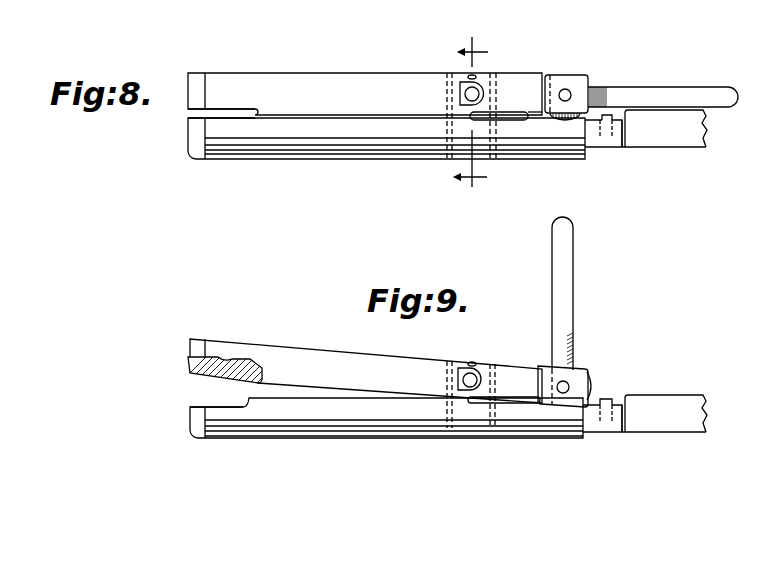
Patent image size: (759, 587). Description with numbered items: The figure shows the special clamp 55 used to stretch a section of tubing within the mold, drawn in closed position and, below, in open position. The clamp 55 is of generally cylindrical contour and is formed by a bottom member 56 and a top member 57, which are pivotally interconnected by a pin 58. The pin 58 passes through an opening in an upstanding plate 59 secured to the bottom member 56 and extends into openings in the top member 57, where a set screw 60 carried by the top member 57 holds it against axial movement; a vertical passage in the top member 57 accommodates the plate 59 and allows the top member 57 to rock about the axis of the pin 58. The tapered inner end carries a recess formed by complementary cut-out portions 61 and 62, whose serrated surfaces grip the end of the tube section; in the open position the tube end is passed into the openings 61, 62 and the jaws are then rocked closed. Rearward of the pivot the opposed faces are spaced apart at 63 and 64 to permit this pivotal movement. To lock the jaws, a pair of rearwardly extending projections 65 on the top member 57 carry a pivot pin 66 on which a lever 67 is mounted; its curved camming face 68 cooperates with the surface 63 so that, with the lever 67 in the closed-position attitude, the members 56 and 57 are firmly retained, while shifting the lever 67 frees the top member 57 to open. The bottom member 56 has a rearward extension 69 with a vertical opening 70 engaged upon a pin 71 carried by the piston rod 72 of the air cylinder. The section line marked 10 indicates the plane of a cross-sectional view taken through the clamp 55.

In FIG. 8, the section line 10- 10 is at (476, 114).
In FIG. 8, the clamp 55 is at (363, 66).
In FIG. 9, the clamp 55 is at (362, 347).
In FIG. 8, the bottom member 56 is at (327, 148).
In FIG. 9, the bottom member 56 is at (285, 433).
In FIG. 8, the top member 57 is at (275, 78).
In FIG. 9, the top member 57 is at (258, 347).
In FIG. 8, the pin 58 is at (466, 89).
In FIG. 9, the pin 58 is at (469, 376).
In FIG. 8, the upstanding plate 59 is at (452, 128).
In FIG. 9, the upstanding plate 59 is at (450, 418).
In FIG. 8, the set screw 60 is at (472, 77).
In FIG. 9, the set screw 60 is at (475, 362).
In FIG. 8, the cut-out portion 61 is at (193, 118).
In FIG. 9, the cut-out portion 61 is at (198, 402).
In FIG. 8, the cut-out portion 62 is at (187, 112).
In FIG. 9, the cut-out portion 62 is at (190, 378).
In FIG. 8, the surface 63 is at (526, 119).
In FIG. 9, the surface 63 is at (504, 400).
In FIG. 8, the surface 64 is at (512, 112).
In FIG. 8, the rearwardly extending projections 65 is at (577, 79).
In FIG. 9, the rearwardly extending projections 65 is at (563, 386).
In FIG. 8, the pivot pin 66 is at (563, 89).
In FIG. 9, the pivot pin 66 is at (559, 382).
In FIG. 8, the lever 67 is at (666, 92).
In FIG. 9, the lever 67 is at (568, 277).
In FIG. 8, the curved camming face 68 is at (581, 119).
In FIG. 9, the curved camming face 68 is at (590, 388).
In FIG. 8, the rearward extension 69 is at (618, 138).
In FIG. 9, the rearward extension 69 is at (622, 403).
In FIG. 8, the vertical opening 70 is at (612, 125).
In FIG. 9, the vertical opening 70 is at (590, 418).
In FIG. 8, the pin 71 is at (607, 115).
In FIG. 9, the pin 71 is at (607, 398).
In FIG. 8, the piston rod 72 is at (697, 148).
In FIG. 9, the piston rod 72 is at (690, 427).